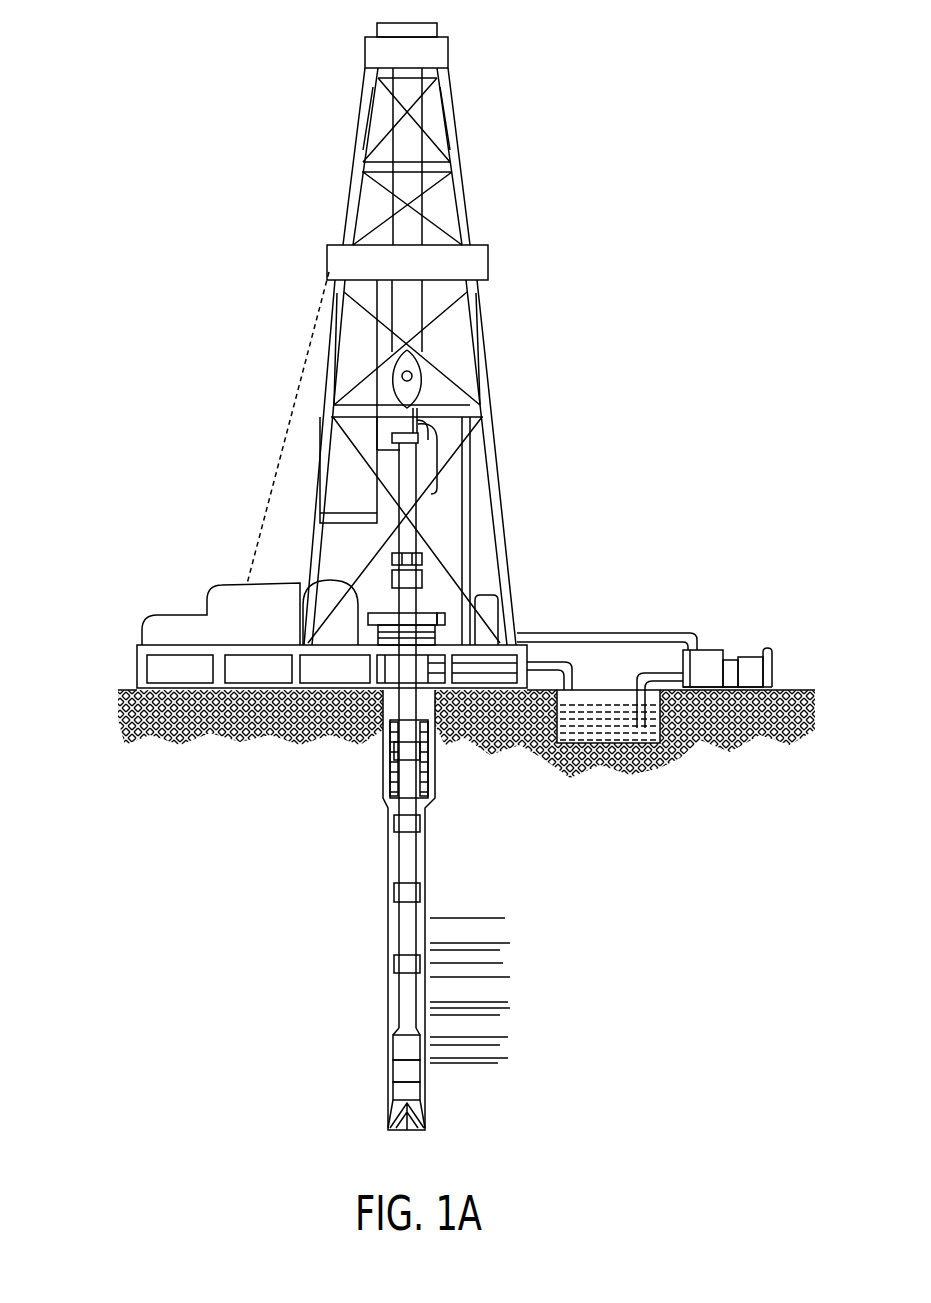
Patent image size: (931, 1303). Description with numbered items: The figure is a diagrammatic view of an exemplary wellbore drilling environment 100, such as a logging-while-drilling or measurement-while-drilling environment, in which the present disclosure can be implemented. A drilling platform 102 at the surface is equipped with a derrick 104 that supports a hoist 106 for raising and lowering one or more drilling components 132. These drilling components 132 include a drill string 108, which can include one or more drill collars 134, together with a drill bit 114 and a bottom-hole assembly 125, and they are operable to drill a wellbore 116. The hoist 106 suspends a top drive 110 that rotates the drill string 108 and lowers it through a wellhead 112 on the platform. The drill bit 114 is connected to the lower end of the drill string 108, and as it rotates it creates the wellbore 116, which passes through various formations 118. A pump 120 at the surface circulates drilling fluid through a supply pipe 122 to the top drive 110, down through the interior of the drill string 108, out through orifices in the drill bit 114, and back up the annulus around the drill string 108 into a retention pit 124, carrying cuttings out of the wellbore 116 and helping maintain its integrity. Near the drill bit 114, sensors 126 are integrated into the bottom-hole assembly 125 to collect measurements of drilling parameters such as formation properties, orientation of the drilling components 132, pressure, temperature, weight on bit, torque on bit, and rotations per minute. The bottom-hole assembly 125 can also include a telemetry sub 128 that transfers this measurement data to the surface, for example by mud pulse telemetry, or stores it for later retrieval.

The wellbore drilling environment 100 is at (290, 78).
The drilling platform 102 is at (137, 665).
The derrick 104 is at (463, 198).
The hoist 106 is at (433, 380).
The drill string 108 is at (416, 860).
The top drive 110 is at (410, 460).
The wellhead 112 is at (430, 607).
The drill bit 114 is at (420, 1118).
The wellbore 116 is at (428, 883).
The formations 118 is at (517, 915).
The pump 120 is at (710, 660).
The supply pipe 122 is at (607, 632).
The retention pit 124 is at (603, 735).
The bottom-hole assembly 125 is at (318, 1020).
The sensors 126 is at (398, 1072).
The telemetry sub 128 is at (398, 1045).
The drilling components 132 is at (423, 558).
The drill collars 134 is at (405, 1078).